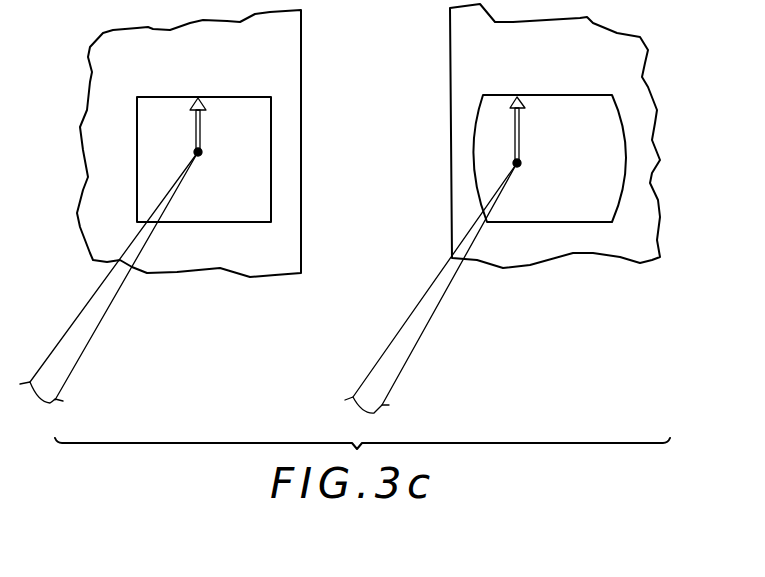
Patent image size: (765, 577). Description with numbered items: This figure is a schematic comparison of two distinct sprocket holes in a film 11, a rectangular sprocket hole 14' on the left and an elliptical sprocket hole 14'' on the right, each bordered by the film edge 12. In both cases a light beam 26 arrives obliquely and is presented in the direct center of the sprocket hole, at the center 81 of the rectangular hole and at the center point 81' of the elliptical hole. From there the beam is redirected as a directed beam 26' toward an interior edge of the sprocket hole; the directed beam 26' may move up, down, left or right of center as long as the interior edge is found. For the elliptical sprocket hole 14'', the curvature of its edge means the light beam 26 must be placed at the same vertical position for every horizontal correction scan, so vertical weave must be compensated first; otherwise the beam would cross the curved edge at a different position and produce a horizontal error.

The film 11 is at (285, 304).
The edge 12 is at (299, 65).
The rectangular sprocket hole 14' is at (244, 159).
The elliptical sprocket hole 14'' is at (509, 158).
The light beam 26 is at (268, 282).
The directed beam 26' is at (385, 129).
The center 81 is at (210, 173).
The center point 81' is at (547, 168).